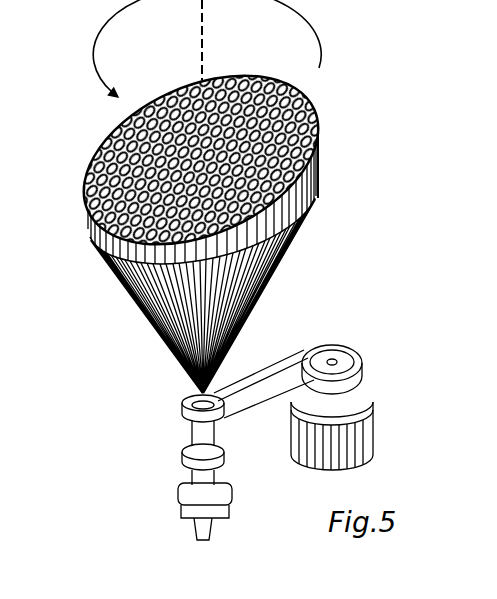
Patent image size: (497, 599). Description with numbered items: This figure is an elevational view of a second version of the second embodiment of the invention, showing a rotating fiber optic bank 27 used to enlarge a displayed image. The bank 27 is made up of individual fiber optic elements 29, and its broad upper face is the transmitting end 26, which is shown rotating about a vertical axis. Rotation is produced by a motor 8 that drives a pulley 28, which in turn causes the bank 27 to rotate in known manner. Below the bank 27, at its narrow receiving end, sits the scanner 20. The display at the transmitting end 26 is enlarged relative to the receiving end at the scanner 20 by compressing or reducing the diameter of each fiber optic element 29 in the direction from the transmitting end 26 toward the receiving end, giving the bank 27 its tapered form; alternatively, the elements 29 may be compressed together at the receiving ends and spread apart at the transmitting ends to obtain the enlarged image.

The motor 8 is at (376, 398).
The scanner 20 is at (236, 498).
The transmitting end 26 is at (118, 124).
The fiber optic bank 27 is at (318, 196).
The pulley 28 is at (268, 366).
The fiber optic element 29 is at (313, 192).